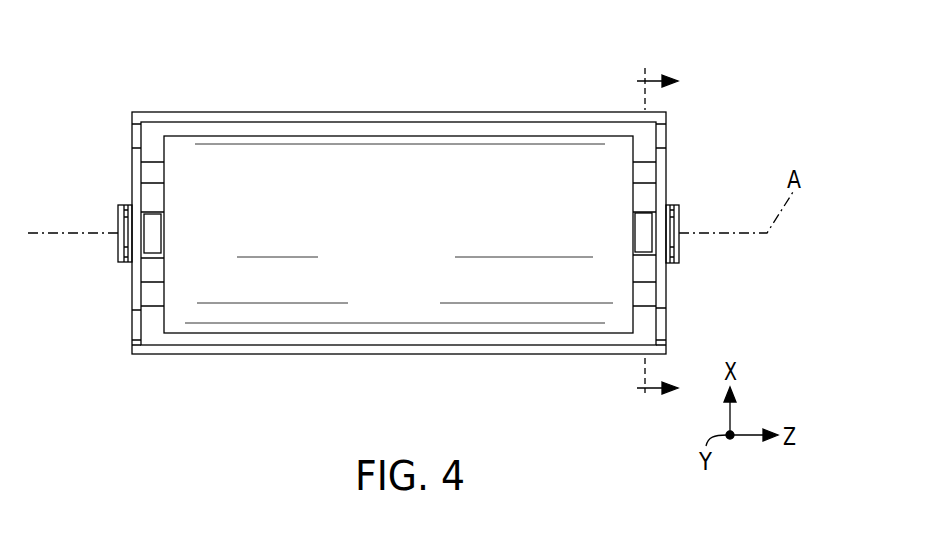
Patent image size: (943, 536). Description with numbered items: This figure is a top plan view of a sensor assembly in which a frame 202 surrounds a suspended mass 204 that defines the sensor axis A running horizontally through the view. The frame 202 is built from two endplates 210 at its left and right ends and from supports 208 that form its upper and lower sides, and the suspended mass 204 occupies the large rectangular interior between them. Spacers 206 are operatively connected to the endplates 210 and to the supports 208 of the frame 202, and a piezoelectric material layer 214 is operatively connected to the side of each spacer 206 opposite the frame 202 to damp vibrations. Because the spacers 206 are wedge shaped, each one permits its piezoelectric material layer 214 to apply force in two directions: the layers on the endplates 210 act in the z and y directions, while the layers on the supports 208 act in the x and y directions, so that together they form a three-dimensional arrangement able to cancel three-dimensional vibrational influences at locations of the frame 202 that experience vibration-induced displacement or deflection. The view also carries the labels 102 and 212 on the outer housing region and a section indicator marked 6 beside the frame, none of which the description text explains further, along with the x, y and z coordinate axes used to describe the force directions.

The battery module 102 is at (709, 81).
The frame 202 is at (136, 86).
The suspended mass 204 is at (318, 311).
The spacer 206 is at (130, 265).
The support 208 is at (160, 173).
The endplate 210 is at (132, 345).
The housing top/bottom wall 212 is at (581, 112).
The piezoelectric material layer 214 is at (165, 232).
The section line 6- 6 is at (657, 239).